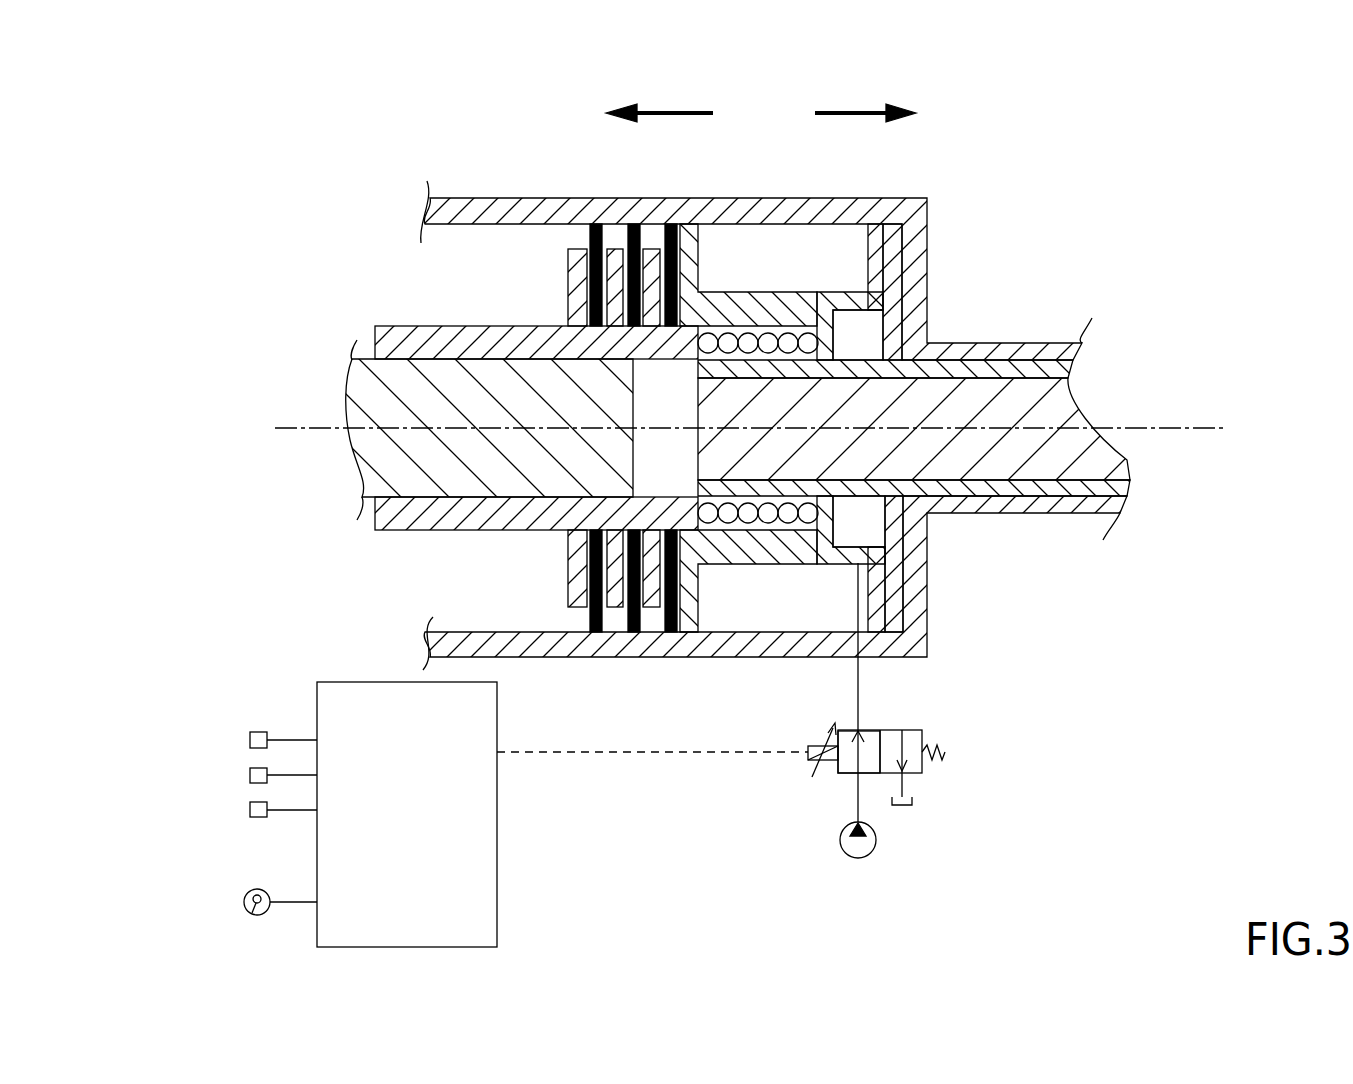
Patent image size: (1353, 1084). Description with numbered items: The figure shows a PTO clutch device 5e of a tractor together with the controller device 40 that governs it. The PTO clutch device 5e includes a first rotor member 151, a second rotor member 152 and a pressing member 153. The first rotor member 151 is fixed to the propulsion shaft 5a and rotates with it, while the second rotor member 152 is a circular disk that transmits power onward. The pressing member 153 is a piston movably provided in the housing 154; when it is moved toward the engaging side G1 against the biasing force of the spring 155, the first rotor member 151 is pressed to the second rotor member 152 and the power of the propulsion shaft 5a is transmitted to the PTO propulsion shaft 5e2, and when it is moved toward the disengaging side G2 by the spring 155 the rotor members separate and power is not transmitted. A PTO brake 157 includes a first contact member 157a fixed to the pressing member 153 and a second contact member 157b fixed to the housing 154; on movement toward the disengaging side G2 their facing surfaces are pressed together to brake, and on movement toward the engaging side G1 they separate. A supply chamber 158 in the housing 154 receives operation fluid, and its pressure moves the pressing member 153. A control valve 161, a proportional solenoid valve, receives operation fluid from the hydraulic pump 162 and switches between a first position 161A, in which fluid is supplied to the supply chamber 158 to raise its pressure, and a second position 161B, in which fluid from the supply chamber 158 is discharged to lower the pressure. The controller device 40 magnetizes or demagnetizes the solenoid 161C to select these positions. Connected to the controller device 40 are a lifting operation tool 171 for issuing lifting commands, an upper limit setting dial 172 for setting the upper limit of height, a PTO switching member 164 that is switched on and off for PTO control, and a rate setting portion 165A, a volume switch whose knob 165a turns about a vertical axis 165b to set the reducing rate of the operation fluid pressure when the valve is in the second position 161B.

The PTO clutch device 5e is at (566, 240).
The propulsion shaft 5a is at (428, 483).
The PTO propulsion shaft 5e2 is at (1052, 398).
The first rotor member 151 is at (613, 249).
The second rotor member 152 is at (675, 249).
The pressing member 153 is at (700, 250).
The housing 154 is at (852, 197).
The spring 155 is at (788, 340).
The PTO brake 157 is at (1037, 164).
The first contact member 157a is at (878, 233).
The second contact member 157b is at (891, 256).
The supply chamber 158 is at (873, 332).
The controller device 40 is at (357, 682).
The lifting operation tool 171 is at (250, 741).
The upper limit setting dial 172 is at (250, 776).
The PTO switching member 164 is at (250, 811).
The rate setting portion 165A is at (138, 858).
The knob 165a is at (254, 891).
The vertical axis 165b is at (254, 913).
The control valve 161 is at (927, 726).
The first position 161A is at (831, 780).
The second position 161B is at (928, 784).
The solenoid 161C is at (808, 750).
The hydraulic pump 162 is at (840, 847).
The engaging side G1 is at (672, 110).
The disengaging side G2 is at (858, 110).